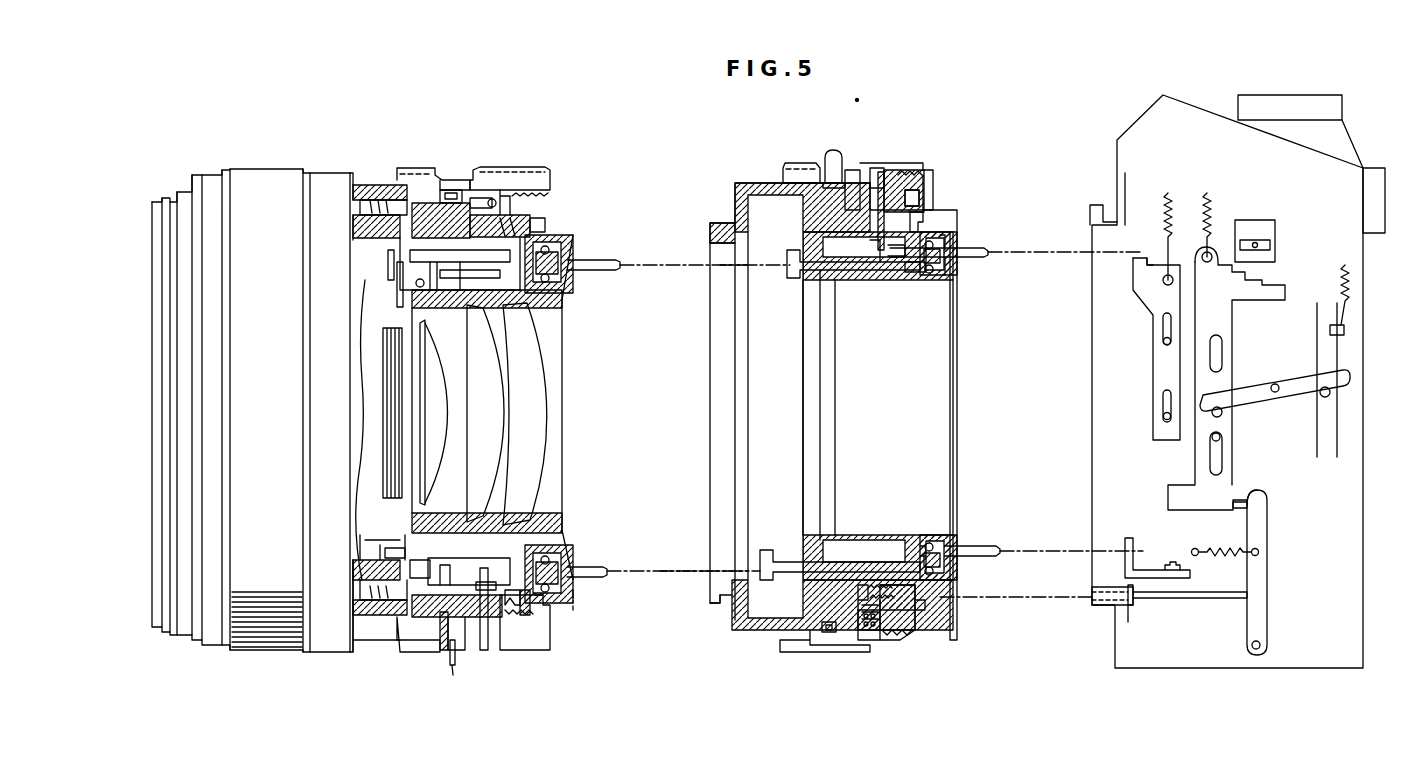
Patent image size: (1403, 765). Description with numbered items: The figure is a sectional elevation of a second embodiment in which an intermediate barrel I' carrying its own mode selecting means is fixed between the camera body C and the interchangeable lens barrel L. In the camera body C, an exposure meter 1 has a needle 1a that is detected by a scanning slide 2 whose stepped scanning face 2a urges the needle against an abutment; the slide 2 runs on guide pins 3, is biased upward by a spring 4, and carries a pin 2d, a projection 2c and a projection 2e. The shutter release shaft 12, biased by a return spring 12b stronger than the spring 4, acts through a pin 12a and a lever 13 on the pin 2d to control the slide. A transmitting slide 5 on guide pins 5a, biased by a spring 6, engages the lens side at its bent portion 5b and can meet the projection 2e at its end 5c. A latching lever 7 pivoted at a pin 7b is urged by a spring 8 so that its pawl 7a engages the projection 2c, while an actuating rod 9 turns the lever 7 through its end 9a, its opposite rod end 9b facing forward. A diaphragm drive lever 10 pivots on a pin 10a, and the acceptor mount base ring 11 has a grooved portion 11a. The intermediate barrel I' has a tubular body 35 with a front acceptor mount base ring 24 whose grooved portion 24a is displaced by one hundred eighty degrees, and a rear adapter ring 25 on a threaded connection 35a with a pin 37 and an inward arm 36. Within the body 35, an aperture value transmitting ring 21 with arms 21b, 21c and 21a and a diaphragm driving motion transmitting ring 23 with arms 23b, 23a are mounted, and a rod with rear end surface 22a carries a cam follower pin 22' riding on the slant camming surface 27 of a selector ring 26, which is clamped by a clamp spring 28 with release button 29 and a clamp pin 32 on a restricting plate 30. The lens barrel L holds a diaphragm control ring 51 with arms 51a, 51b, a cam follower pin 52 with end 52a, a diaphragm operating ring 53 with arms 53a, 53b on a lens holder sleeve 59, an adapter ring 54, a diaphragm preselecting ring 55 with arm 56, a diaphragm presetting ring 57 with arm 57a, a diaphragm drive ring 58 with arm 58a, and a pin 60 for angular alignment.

The interchangeable objective lens barrel L is at (422, 180).
The camera body C is at (1200, 96).
The intermediate barrel I' is at (877, 107).
The exposure meter 1 is at (1250, 222).
The needle 1a is at (1258, 243).
The scanning slide 2 is at (1228, 326).
The stepped scanning face 2a is at (1270, 285).
The projection 2c is at (1240, 505).
The pin 2d is at (1222, 412).
The projection 2e is at (1168, 500).
The guide pins 3 is at (1222, 437).
The helical spring 4 is at (1208, 195).
The transmitting slide 5 is at (1150, 373).
The guide pins 5a is at (1162, 341).
The rectangularly bent portion 5b is at (1140, 265).
The end 5c is at (1160, 440).
The helical spring 6 is at (1168, 195).
The latching lever 7 is at (1267, 572).
The pawl 7a is at (1248, 502).
The pivot pin 7b is at (1262, 645).
The helical spring 8 is at (1222, 562).
The actuating rod 9 is at (1180, 600).
The end 9a is at (1246, 598).
The rod end 9b is at (1092, 597).
The diaphragm drive lever 10 is at (1125, 540).
The pin 10a is at (1172, 565).
The acceptor mount base ring 11 is at (1097, 605).
The grooved portion 11a is at (1092, 205).
The shaft 12 is at (1332, 436).
The pin 12a is at (1325, 396).
The helical return spring 12b is at (1347, 280).
The lever 13 is at (1296, 380).
The aperture value transmitting ring 21 is at (940, 252).
The rear arm 21a is at (970, 254).
The front arm 21b is at (783, 572).
The member 21c is at (890, 262).
The cam follower pin 22' is at (880, 649).
The rear end surface 22a is at (915, 608).
The diaphragm driving motion transmitting ring 23 is at (930, 272).
The rear arm 23a is at (970, 551).
The front arm 23b is at (790, 260).
The acceptor mount base ring 24 is at (712, 222).
The grooved portion 24a is at (708, 605).
The adapter ring 25 is at (897, 168).
The selector ring 26 is at (800, 168).
The slant camming surface 27 is at (862, 600).
The clamp spring 28 is at (845, 172).
The release button 29 is at (832, 152).
The restricting plate 30 is at (818, 622).
The clamp pin 32 is at (828, 632).
The tubular body 35 is at (745, 183).
The threaded connection 35a is at (895, 625).
The arm 36 is at (875, 262).
The pin 37 is at (922, 222).
The diaphragm control ring 51 is at (568, 590).
The rear arm 51a is at (603, 578).
The front arm 51b is at (452, 600).
The cam follower pin 52 is at (492, 195).
The pin end 52a is at (530, 215).
The diaphragm operating ring 53 is at (560, 243).
The rear arm 53a is at (612, 262).
The screw 53b is at (444, 200).
The adapter ring 54 is at (530, 648).
The diaphragm preselecting ring 55 is at (412, 172).
The arm 56 is at (486, 630).
The diaphragm presetting ring 57 is at (410, 622).
The arm 57a is at (474, 620).
The diaphragm drive ring 58 is at (380, 262).
The pin 58a is at (392, 262).
The lens holder sleeve 59 is at (535, 300).
The pin 60 is at (545, 610).